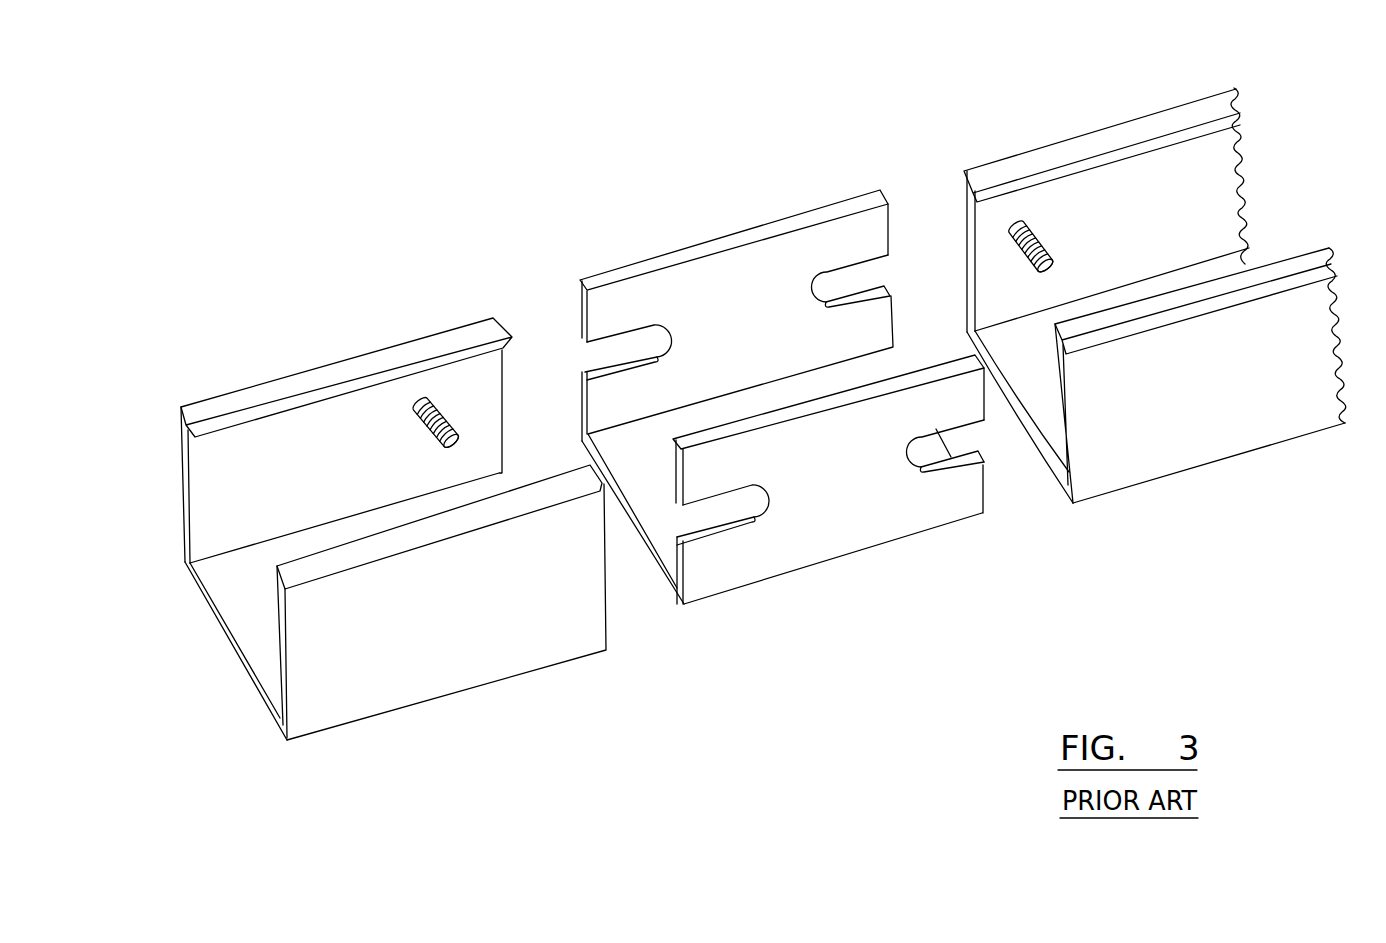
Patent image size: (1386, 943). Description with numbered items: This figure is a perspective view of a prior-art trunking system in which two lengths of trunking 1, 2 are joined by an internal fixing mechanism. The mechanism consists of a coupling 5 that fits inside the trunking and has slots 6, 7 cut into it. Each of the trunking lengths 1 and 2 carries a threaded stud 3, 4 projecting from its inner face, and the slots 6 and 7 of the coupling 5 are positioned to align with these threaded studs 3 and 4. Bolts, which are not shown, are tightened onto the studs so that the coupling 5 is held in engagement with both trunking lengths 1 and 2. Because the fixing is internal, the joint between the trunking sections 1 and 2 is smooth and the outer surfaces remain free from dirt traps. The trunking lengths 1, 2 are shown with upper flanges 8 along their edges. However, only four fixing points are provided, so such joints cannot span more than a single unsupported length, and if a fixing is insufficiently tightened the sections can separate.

The trunking length 1 is at (507, 605).
The trunking length 2 is at (1237, 385).
The threaded stud 3 is at (433, 400).
The threaded stud 4 is at (1025, 217).
The coupling 5 is at (738, 291).
The slot 6 is at (620, 347).
The slot 7 is at (838, 286).
The flange 8 is at (293, 383).